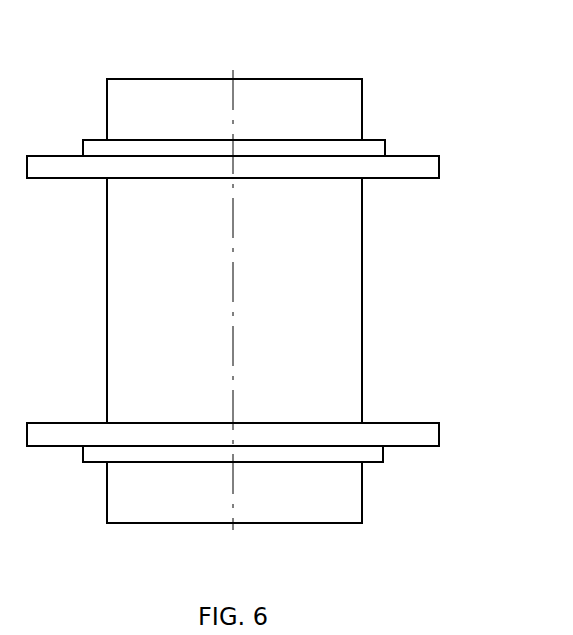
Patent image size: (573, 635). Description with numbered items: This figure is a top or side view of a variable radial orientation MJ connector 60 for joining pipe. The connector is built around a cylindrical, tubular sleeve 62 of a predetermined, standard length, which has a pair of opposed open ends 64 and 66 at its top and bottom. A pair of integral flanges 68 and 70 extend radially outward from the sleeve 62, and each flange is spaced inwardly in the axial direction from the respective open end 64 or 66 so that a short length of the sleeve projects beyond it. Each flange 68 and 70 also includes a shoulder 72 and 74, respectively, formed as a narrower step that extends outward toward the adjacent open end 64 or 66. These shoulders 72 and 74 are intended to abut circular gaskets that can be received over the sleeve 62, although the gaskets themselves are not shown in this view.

The variable radial orientation MJ connector 60 is at (432, 290).
The tubular sleeve 62 is at (340, 251).
The open end 64 is at (270, 79).
The open end 66 is at (336, 507).
The flange 68 is at (430, 168).
The flange 70 is at (430, 437).
The shoulder 72 is at (383, 148).
The shoulder 74 is at (375, 457).